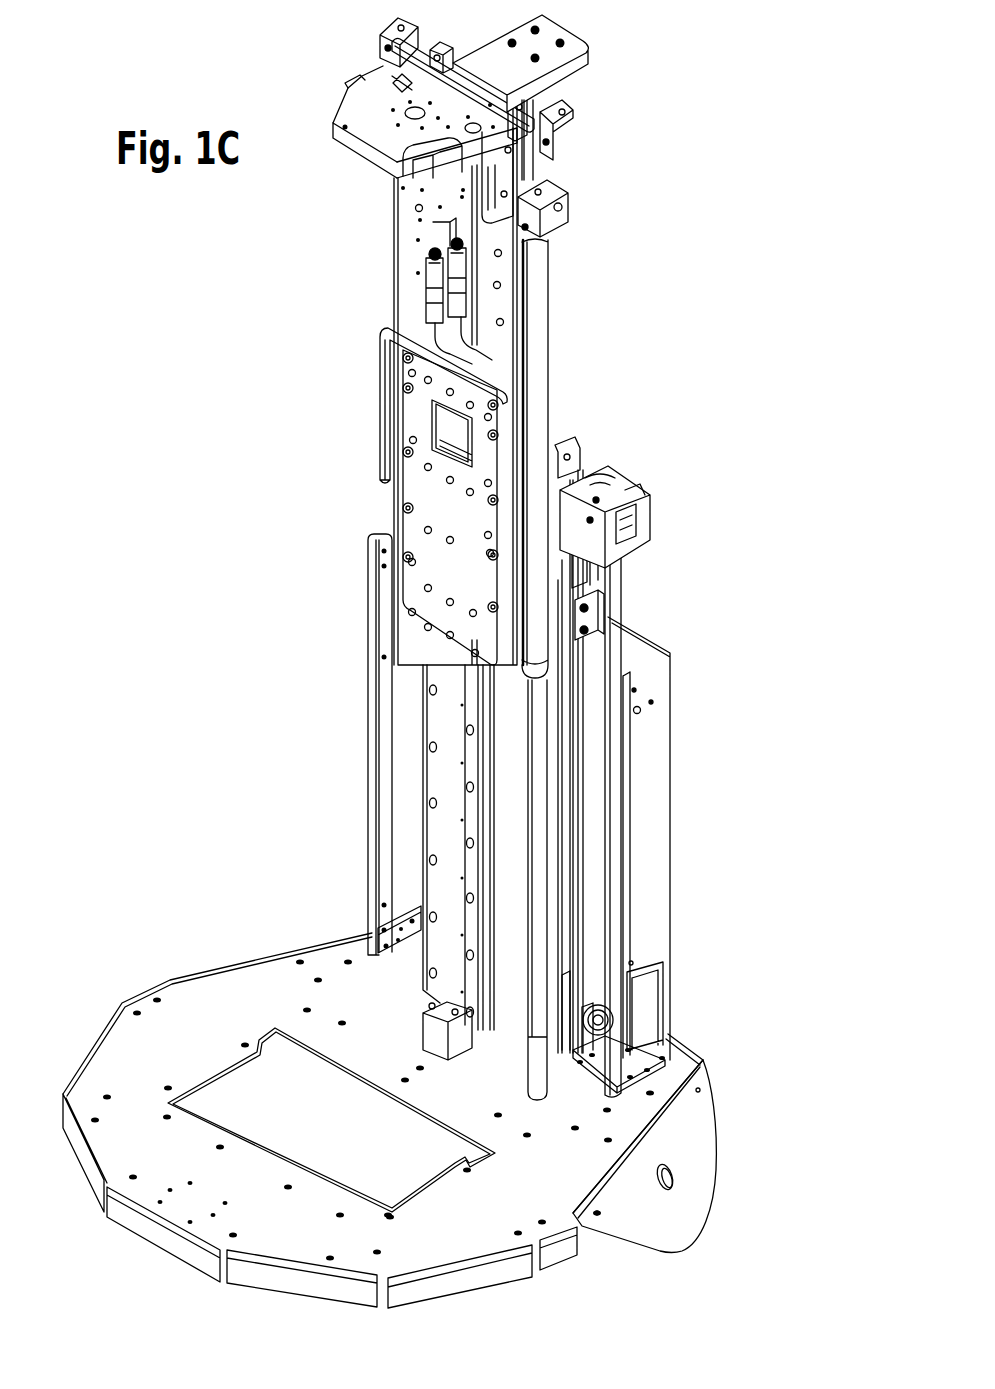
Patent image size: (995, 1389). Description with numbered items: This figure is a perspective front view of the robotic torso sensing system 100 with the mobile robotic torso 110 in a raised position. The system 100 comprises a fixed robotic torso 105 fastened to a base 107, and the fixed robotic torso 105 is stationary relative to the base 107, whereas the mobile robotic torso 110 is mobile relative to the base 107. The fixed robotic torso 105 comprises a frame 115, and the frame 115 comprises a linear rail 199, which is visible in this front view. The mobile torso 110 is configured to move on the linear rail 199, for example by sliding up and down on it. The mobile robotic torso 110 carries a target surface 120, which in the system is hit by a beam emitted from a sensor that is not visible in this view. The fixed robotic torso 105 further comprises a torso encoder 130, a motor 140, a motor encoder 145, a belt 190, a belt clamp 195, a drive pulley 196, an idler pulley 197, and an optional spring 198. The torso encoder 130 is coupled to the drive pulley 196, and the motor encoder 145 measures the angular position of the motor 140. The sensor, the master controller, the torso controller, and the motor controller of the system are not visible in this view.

The robotic torso sensing system 100 is at (760, 1124).
The fixed robotic torso 105 is at (787, 1075).
The base 107 is at (551, 1177).
The mobile robotic torso 110 is at (280, 12).
The frame 115 is at (653, 788).
The target surface 120 is at (562, 27).
The torso encoder 130 is at (630, 528).
The motor 140 is at (560, 483).
The motor encoder 145 is at (558, 453).
The belt 190 is at (580, 574).
The belt clamp 195 is at (580, 615).
The drive pulley 196 is at (657, 503).
The idler pulley 197 is at (603, 1021).
The spring 198 is at (548, 318).
The linear rail 199 is at (465, 845).